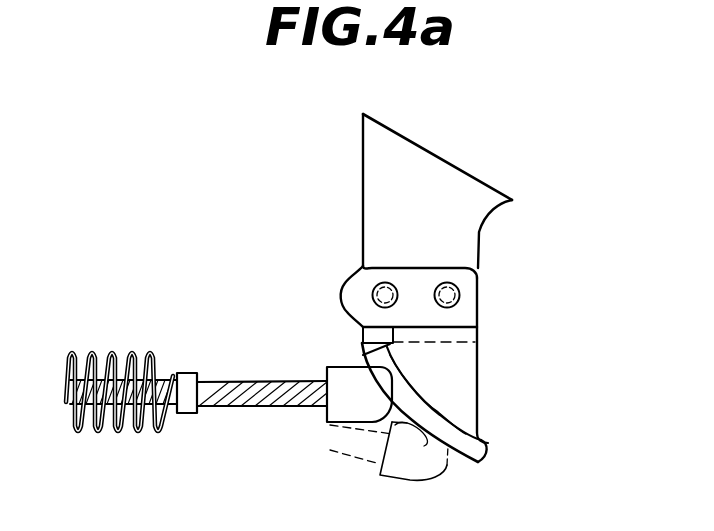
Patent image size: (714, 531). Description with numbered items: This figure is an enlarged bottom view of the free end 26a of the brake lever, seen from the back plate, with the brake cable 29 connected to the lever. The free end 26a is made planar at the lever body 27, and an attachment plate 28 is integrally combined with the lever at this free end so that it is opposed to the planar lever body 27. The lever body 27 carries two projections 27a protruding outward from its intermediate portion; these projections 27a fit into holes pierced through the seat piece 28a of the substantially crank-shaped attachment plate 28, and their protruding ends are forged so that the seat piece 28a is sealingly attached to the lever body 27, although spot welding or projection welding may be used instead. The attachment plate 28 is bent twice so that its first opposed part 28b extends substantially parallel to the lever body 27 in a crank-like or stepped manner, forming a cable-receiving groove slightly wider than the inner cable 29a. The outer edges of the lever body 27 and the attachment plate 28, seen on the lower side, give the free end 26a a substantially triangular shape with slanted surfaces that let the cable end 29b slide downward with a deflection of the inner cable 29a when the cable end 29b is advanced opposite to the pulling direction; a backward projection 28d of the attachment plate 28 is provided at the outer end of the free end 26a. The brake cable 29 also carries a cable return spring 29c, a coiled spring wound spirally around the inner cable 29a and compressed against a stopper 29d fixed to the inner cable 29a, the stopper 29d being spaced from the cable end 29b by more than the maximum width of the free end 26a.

The free end 26a is at (320, 242).
The lever body 27 is at (436, 183).
The projections 27a is at (385, 283).
The attachment plate 28 is at (481, 309).
The seat piece 28a is at (477, 282).
The first opposed part 28b is at (455, 378).
The backward projection 28d is at (488, 443).
The brake cable 29 is at (263, 406).
The inner cable 29a is at (210, 378).
The cable end 29b is at (327, 367).
The cable return spring 29c is at (92, 352).
The stopper 29d is at (187, 414).